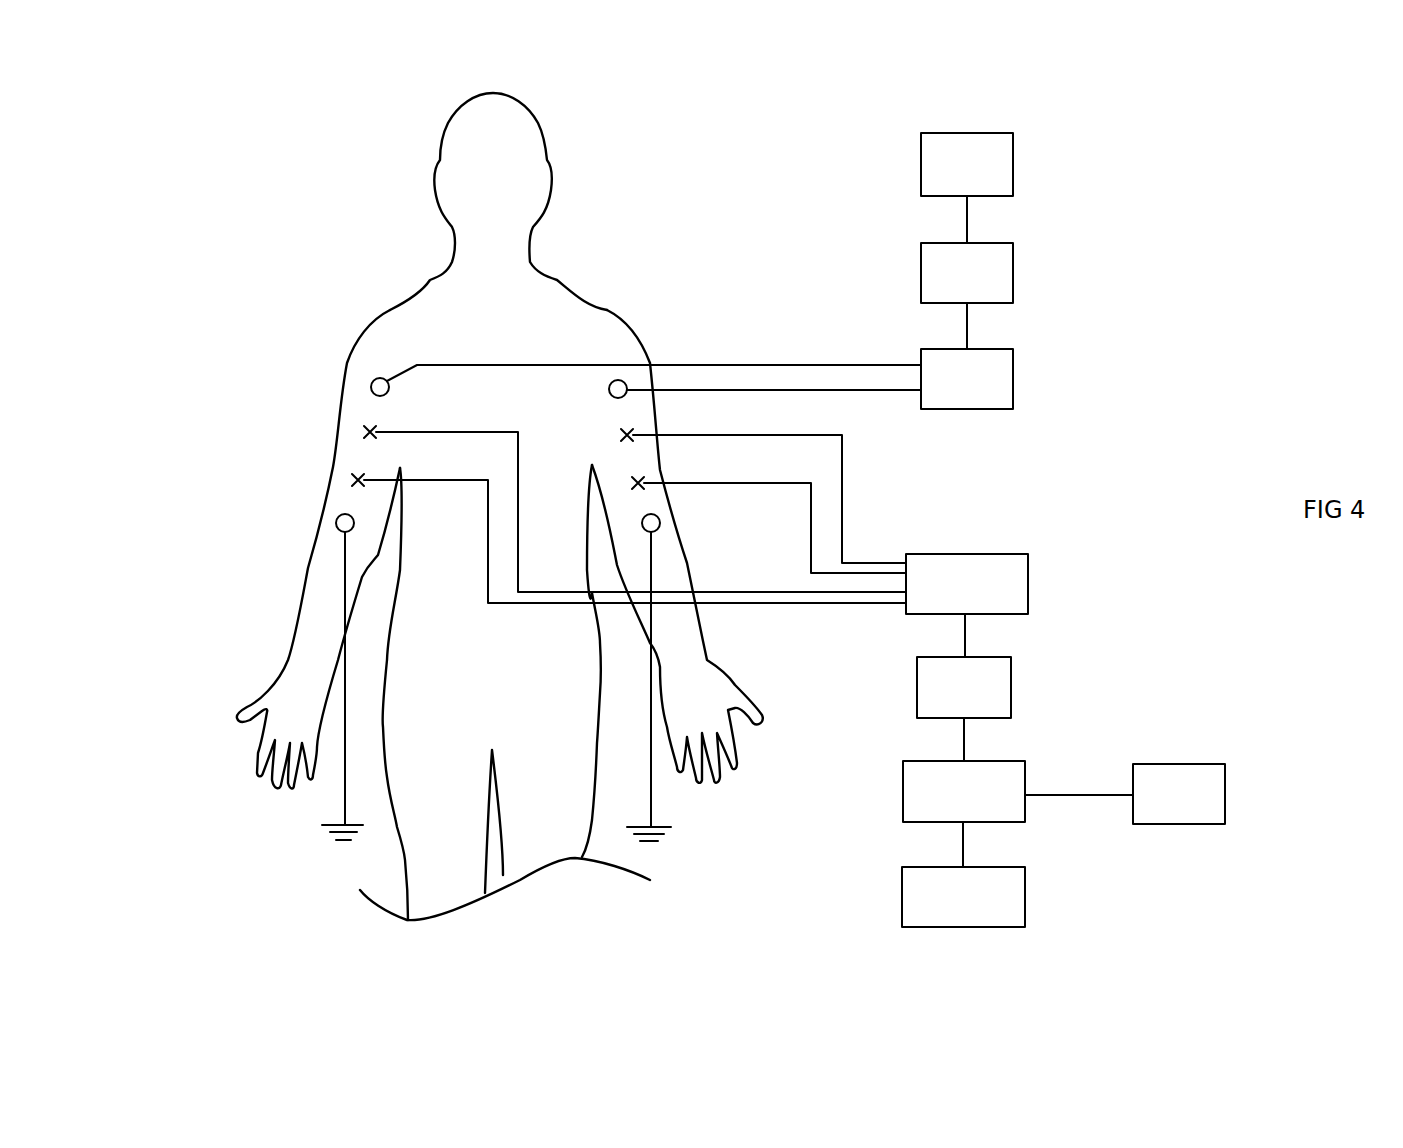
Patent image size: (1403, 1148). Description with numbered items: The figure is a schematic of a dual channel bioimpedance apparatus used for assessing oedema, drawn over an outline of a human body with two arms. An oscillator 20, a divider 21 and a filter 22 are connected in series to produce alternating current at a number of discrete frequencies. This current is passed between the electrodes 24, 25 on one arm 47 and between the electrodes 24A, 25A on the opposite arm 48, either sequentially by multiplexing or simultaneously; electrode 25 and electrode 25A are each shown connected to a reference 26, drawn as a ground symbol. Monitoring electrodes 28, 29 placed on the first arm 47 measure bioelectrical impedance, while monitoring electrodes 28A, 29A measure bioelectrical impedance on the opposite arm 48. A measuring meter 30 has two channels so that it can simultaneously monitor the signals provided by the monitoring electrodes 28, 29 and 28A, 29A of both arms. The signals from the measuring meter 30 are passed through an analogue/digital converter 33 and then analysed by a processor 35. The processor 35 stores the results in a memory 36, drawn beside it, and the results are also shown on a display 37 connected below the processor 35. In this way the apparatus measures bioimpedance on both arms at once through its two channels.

The oscillator 20 is at (1013, 165).
The divider 21 is at (1013, 275).
The filter 22 is at (1013, 380).
The electrode 24 is at (371, 382).
The electrode 24A is at (628, 382).
The electrode 25 is at (336, 521).
The electrode 25A is at (660, 519).
The reference 26 is at (330, 832).
The monitoring electrode 28 is at (363, 430).
The monitoring electrode 28A is at (633, 430).
The monitoring electrode 29 is at (354, 478).
The monitoring electrode 29A is at (645, 479).
The measuring meter 30 is at (1028, 586).
The analogue/digital converter 33 is at (1011, 690).
The processor 35 is at (903, 797).
The memory 36 is at (1225, 795).
The display 37 is at (1025, 897).
The arm 47 is at (312, 610).
The arm 48 is at (683, 613).